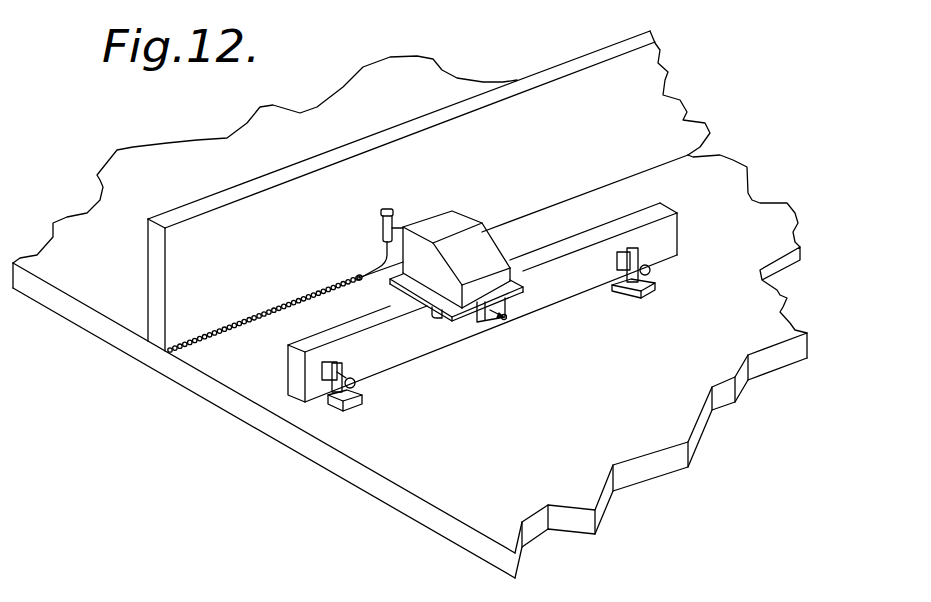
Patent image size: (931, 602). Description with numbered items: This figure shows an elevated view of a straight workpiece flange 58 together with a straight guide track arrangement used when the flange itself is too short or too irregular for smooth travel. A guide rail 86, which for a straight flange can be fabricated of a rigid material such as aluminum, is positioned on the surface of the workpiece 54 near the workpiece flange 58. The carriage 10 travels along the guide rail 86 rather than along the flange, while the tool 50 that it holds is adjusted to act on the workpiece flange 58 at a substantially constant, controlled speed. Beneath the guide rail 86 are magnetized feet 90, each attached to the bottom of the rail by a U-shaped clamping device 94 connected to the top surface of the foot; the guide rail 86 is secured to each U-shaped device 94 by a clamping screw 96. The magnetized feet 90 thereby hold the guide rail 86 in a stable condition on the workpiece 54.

The carriage 10 is at (484, 209).
The tool 50 is at (380, 229).
The workpiece 54 is at (608, 428).
The workpiece flange 58 is at (613, 138).
The guide rail 86 is at (554, 292).
The magnetized feet 90 is at (355, 405).
The U-shaped clamping device 94 is at (346, 372).
The clamping screw 96 is at (326, 397).